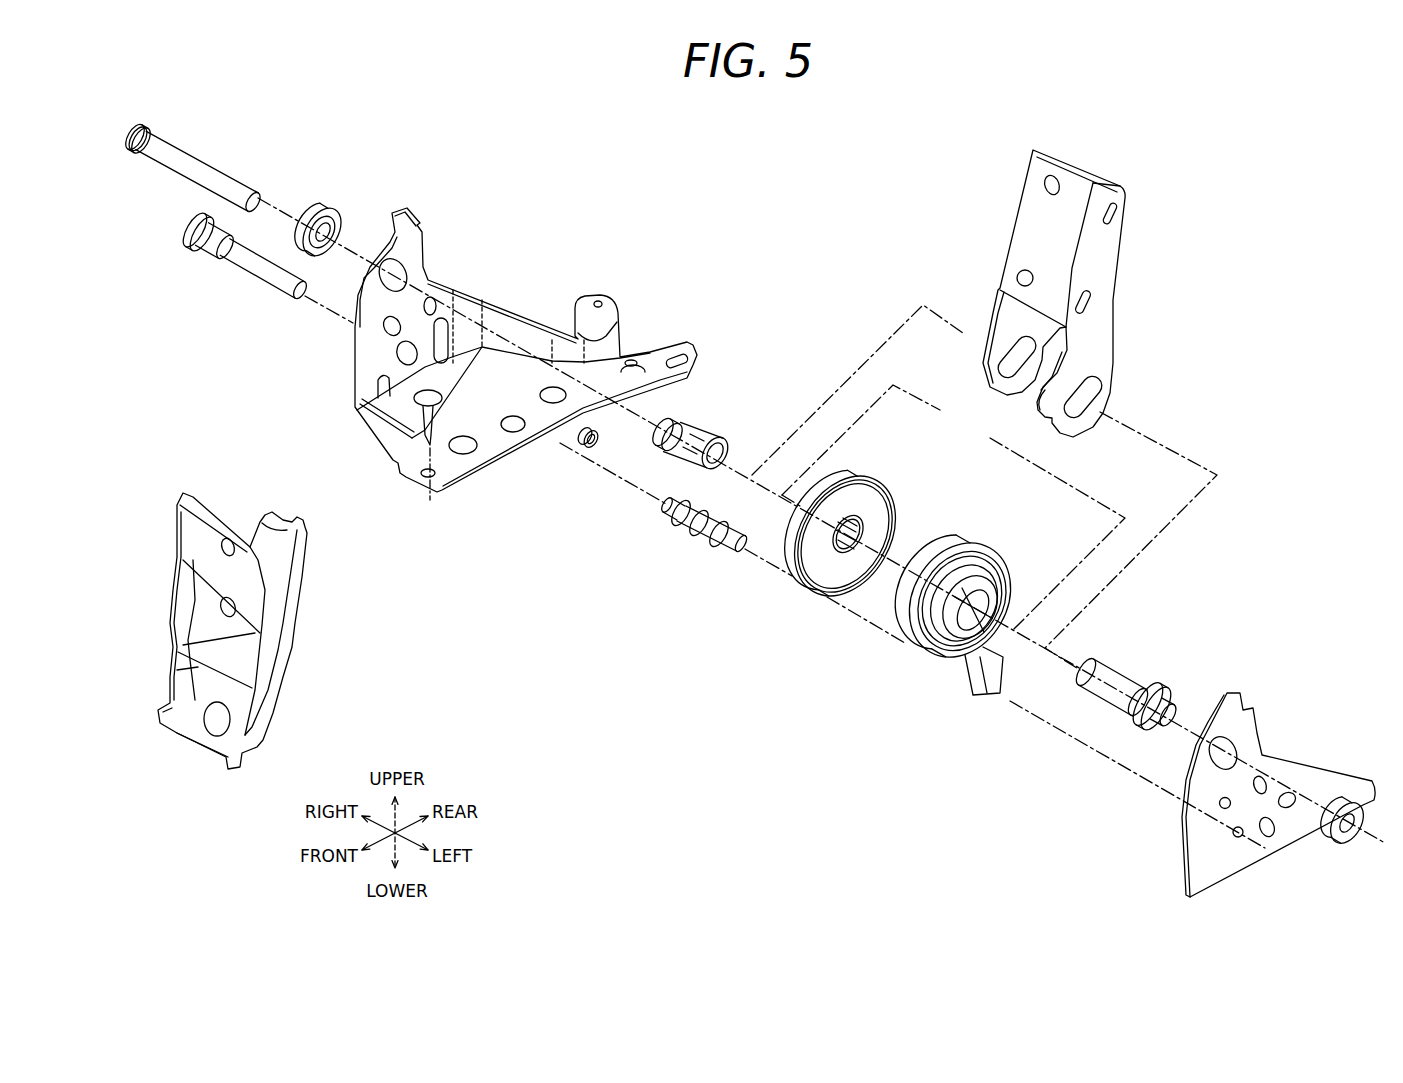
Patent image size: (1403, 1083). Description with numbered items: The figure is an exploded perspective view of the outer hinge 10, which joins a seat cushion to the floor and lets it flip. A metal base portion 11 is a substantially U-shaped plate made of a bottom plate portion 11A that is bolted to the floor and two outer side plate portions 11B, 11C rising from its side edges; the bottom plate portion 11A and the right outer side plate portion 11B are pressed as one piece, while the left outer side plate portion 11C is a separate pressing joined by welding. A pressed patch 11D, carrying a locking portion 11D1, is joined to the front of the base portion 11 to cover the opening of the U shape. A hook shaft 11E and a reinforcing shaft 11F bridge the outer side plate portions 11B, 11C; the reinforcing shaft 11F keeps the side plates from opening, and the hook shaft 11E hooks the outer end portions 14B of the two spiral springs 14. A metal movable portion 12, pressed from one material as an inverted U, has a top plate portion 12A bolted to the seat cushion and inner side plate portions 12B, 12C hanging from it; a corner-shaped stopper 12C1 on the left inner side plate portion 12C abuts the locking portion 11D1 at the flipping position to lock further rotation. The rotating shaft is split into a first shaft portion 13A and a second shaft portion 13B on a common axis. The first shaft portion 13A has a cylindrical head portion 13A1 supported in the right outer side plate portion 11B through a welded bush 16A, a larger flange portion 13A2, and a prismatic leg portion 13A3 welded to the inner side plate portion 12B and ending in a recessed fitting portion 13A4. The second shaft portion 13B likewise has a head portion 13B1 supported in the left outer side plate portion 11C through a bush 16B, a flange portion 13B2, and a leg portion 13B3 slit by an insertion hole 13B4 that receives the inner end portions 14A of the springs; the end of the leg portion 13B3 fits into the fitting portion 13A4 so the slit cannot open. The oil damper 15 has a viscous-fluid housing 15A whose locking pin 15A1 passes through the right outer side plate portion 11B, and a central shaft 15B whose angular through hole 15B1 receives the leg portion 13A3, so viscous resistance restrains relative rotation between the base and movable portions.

The outer hinge 10 is at (598, 690).
The base portion 11 is at (488, 300).
The bottom plate portion 11A is at (487, 425).
The right outer side plate portion 11B is at (378, 355).
The left outer side plate portion 11C is at (1300, 772).
The patch 11D is at (233, 647).
The locking portion 11D1 is at (271, 513).
The hook shaft 11E is at (211, 246).
The reinforcing shaft 11F is at (197, 167).
The movable portion 12 is at (1061, 294).
The top plate portion 12A is at (1040, 230).
The right inner side plate portion 12B is at (1017, 317).
The left inner side plate portion 12C is at (1095, 338).
The stopper 12C1 is at (1040, 422).
The first shaft portion 13A is at (696, 420).
The head portion 13A1 is at (670, 437).
The flange portion 13A2 is at (670, 470).
The leg portion 13A3 is at (672, 450).
The fitting portion 13A4 is at (723, 453).
The second shaft portion 13B is at (1128, 706).
The head portion 13B1 is at (1175, 716).
The flange portion 13B2 is at (1140, 722).
The leg portion 13B3 is at (1097, 687).
The insertion hole 13B4 is at (1105, 673).
The spiral spring 14 is at (971, 607).
The inner end portion 14A is at (960, 593).
The outer end portion 14B is at (965, 672).
The oil damper 15 is at (835, 540).
The housing 15A is at (870, 498).
The locking pin 15A1 is at (823, 600).
The shaft 15B is at (862, 525).
The through hole 15B1 is at (810, 580).
The bush 16A is at (312, 206).
The bush 16B is at (1337, 845).